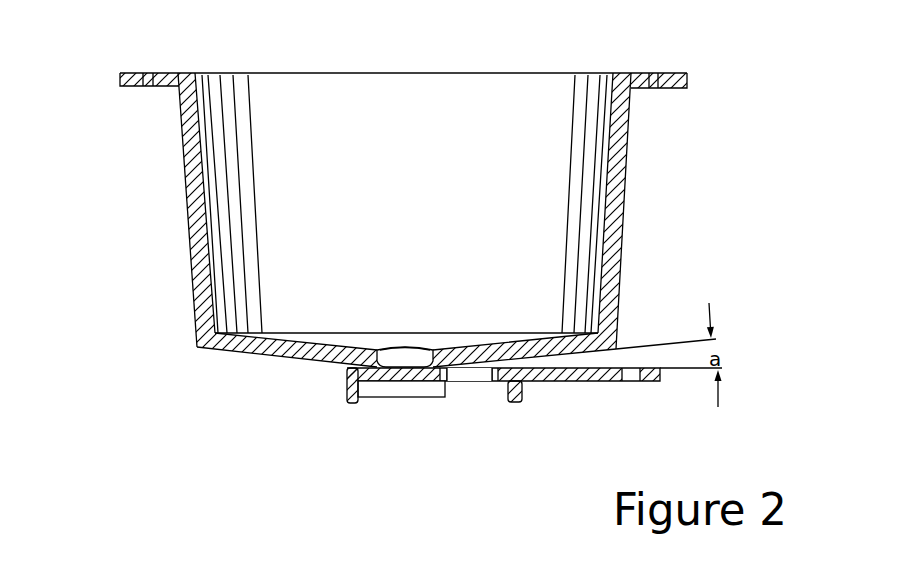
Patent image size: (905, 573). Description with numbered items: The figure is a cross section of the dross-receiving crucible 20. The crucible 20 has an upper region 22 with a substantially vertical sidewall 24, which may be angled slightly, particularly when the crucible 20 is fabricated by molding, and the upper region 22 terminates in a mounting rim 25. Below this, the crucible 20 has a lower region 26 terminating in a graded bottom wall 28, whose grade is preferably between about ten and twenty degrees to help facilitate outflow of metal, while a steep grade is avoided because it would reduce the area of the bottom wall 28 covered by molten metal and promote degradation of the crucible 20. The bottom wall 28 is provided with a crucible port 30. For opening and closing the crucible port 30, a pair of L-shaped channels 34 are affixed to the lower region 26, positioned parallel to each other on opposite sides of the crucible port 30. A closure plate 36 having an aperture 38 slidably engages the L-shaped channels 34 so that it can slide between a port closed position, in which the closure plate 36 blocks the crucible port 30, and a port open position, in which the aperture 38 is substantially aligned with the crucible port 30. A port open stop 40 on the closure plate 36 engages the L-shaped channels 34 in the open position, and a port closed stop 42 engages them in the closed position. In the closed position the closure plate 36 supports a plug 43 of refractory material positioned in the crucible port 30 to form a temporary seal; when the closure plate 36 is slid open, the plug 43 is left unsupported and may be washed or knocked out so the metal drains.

The dross-receiving crucible 20 is at (601, 48).
The upper region 22 is at (170, 153).
The substantially vertical sidewall 24 is at (190, 280).
The mounting rim 25 is at (168, 72).
The lower region 26 is at (184, 347).
The graded bottom wall 28 is at (256, 368).
The crucible port 30 is at (376, 349).
The L-shaped channels 34 is at (411, 398).
The closure plate 36 is at (558, 395).
The aperture 38 is at (452, 378).
The port open stop 40 is at (515, 400).
The port closed stop 42 is at (345, 392).
The plug 43 is at (415, 349).